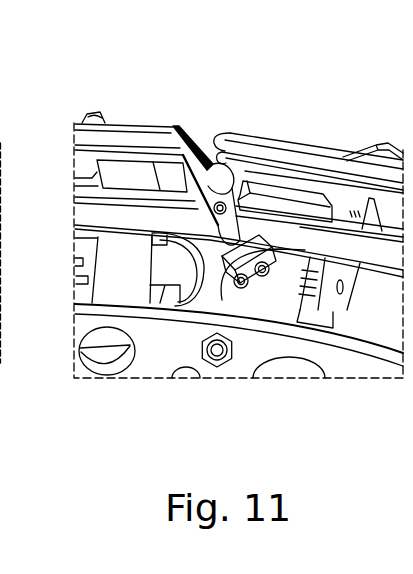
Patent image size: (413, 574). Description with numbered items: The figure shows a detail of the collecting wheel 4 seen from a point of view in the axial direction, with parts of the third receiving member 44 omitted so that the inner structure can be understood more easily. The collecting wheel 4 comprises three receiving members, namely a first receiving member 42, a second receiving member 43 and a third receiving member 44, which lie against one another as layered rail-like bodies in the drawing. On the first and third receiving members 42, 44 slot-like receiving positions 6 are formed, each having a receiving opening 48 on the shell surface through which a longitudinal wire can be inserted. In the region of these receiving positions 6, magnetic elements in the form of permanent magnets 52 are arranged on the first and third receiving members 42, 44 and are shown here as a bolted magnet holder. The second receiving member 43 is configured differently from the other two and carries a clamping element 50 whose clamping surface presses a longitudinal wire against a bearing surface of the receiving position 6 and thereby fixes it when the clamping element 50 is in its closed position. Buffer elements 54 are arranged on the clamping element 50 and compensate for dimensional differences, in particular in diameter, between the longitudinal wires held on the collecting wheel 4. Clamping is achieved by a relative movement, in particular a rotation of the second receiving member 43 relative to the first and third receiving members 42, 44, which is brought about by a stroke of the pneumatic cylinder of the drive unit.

The collecting wheel 4 is at (197, 402).
The receiving position 6 is at (216, 91).
The first receiving member 42 is at (65, 139).
The second receiving member 43 is at (65, 174).
The third receiving member 44 is at (65, 225).
The receiving opening 48 is at (187, 112).
The clamping element 50 is at (117, 178).
The permanent magnet 52 is at (223, 138).
The buffer element 54 is at (177, 265).